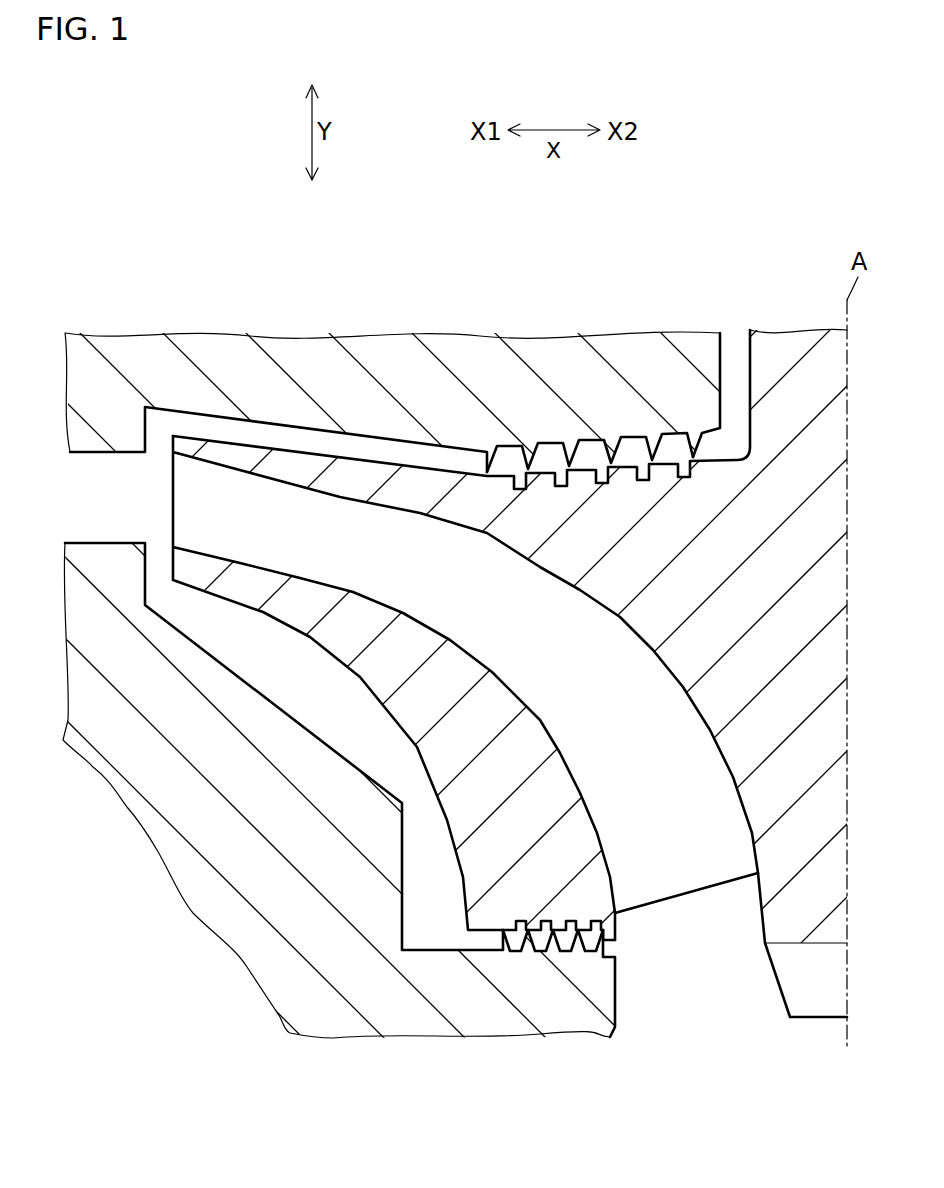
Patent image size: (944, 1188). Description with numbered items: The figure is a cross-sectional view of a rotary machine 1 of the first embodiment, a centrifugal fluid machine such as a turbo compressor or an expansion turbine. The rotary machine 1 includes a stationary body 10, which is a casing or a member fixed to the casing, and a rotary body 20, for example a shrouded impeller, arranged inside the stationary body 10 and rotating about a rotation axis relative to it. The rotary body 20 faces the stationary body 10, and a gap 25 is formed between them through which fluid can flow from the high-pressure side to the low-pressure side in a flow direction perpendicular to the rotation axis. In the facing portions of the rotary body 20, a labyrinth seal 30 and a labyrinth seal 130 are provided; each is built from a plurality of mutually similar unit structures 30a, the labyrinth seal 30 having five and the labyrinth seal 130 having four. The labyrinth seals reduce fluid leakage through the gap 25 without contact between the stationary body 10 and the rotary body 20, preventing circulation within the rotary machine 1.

The rotary machine 1 is at (97, 231).
The stationary body 10 is at (213, 348).
The rotary body 20 is at (788, 345).
The gap 25 is at (459, 466).
The labyrinth seal 30 is at (472, 650).
The unit structure 30a is at (590, 955).
The labyrinth seal 130 is at (486, 943).